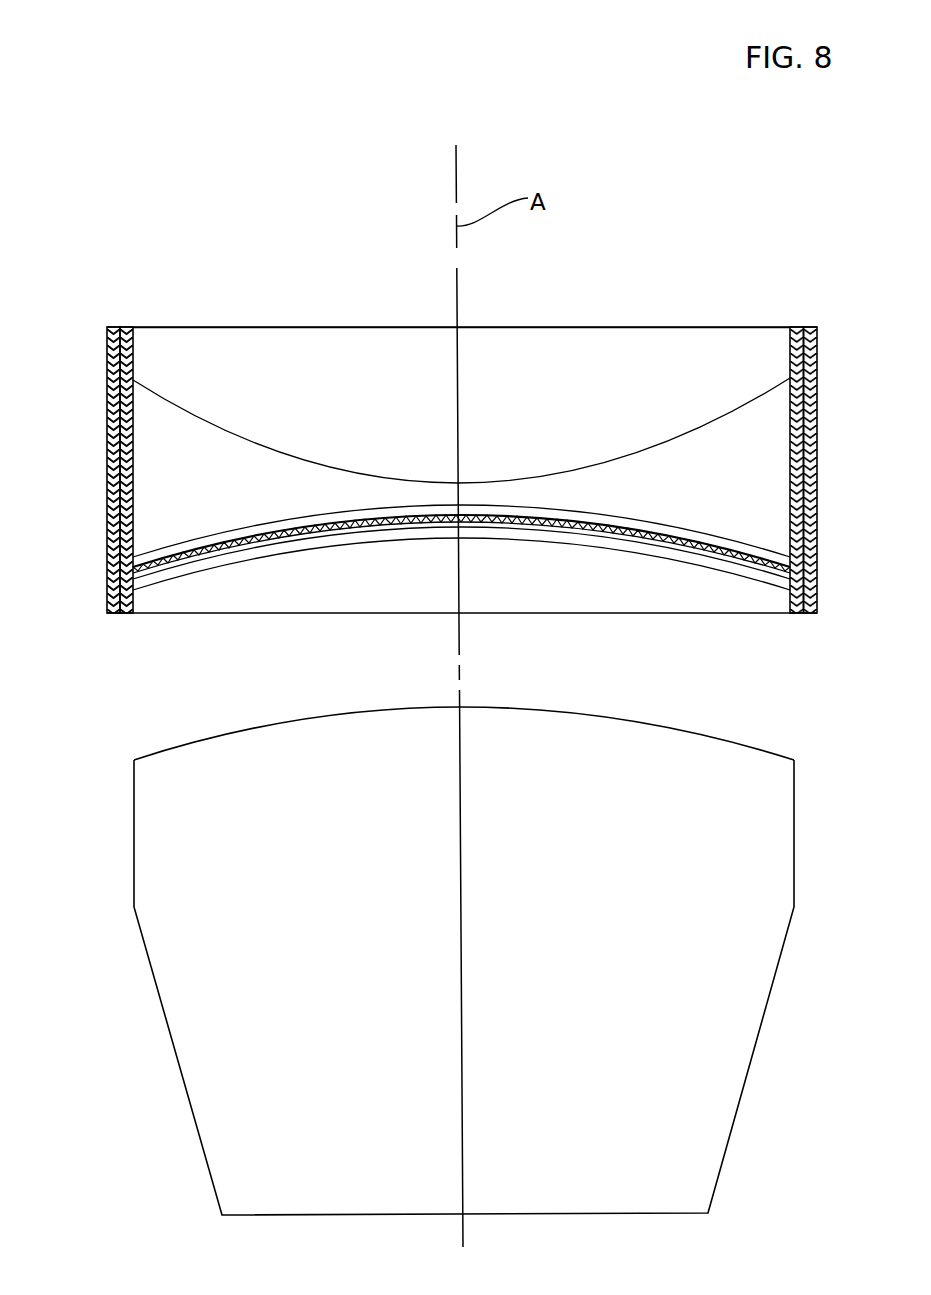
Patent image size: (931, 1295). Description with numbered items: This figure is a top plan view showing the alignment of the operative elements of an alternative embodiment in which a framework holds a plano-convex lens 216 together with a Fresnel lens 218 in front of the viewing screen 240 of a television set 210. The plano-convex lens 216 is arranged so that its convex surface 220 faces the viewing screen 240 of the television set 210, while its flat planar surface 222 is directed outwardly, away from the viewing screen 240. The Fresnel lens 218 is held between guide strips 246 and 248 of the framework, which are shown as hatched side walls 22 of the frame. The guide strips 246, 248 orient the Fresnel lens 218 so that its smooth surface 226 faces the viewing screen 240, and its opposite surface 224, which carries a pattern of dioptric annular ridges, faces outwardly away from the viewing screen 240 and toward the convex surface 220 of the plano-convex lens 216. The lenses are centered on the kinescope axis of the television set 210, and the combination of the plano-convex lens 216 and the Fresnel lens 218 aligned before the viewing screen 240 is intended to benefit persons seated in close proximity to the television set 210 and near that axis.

The plano-convex lens 216 is at (590, 327).
The flat planar surface 222 is at (192, 328).
The side wall 22 is at (818, 533).
The convex surface 220 is at (677, 442).
The opposite surface 224 is at (670, 532).
The guide strip 248 is at (163, 557).
The Fresnel lens 218 is at (614, 543).
The smooth surface 226 is at (367, 533).
The guide strip 246 is at (217, 563).
The television set 210 is at (165, 1020).
The viewing screen 240 is at (226, 733).